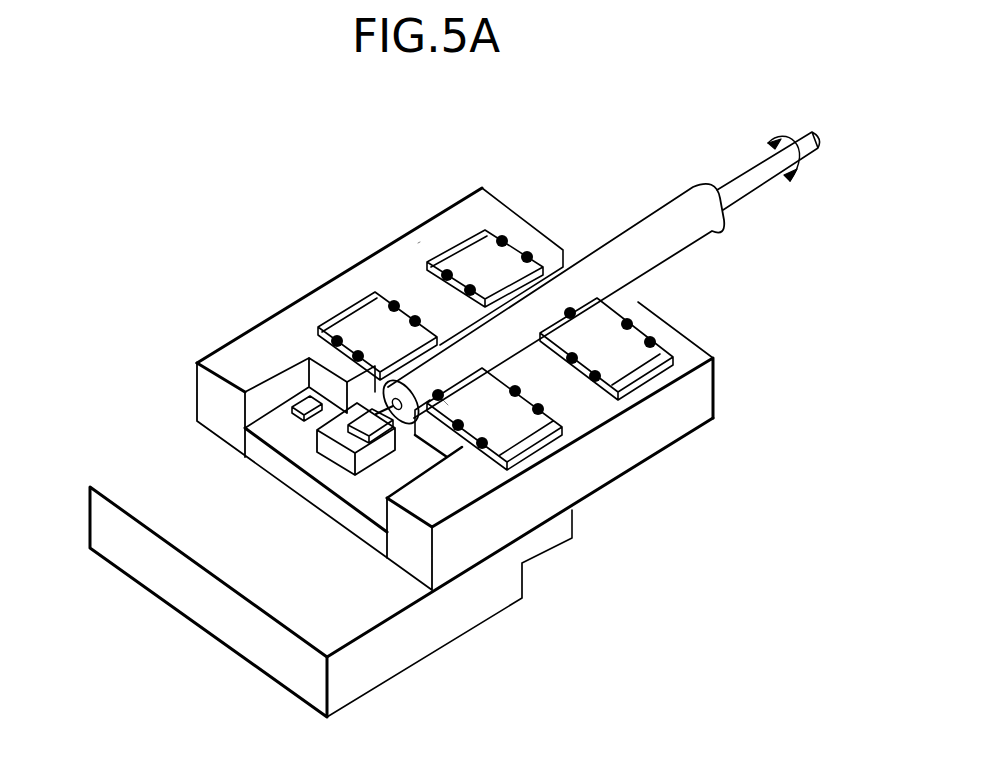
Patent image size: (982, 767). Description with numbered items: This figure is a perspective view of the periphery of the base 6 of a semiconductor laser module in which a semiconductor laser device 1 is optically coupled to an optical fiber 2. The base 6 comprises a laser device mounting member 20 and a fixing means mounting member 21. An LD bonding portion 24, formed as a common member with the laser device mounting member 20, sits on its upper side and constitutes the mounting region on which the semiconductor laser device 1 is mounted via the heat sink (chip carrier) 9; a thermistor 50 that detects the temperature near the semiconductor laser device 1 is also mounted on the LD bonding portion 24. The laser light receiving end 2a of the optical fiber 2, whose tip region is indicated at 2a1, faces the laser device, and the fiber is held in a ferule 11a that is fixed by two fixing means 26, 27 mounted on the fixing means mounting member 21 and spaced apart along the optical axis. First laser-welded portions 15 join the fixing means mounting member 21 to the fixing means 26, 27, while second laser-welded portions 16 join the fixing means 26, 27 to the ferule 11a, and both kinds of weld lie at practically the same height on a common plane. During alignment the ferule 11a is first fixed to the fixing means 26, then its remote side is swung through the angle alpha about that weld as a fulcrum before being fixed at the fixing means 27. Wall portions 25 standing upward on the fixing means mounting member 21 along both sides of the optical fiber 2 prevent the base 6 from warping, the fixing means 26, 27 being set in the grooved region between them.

The semiconductor laser device 1 is at (352, 412).
The optical fiber 2 is at (738, 178).
The laser light receiving end 2a is at (367, 387).
The optical fiber tip 2a1 is at (462, 430).
The base 6 is at (540, 595).
The heat sink (chip carrier) 9 is at (335, 432).
The ferule 11a is at (668, 210).
The first laser-welded portion 15 is at (417, 326).
The second laser-welded portion 16 is at (570, 313).
The laser device mounting member 20 is at (372, 667).
The fixing means mounting member 21 is at (685, 417).
The LD bonding portion 24 is at (405, 480).
The wall portions 25 is at (418, 243).
The fixing means 26 is at (330, 335).
The fixing means 27 is at (483, 262).
The thermistor 50 is at (300, 408).